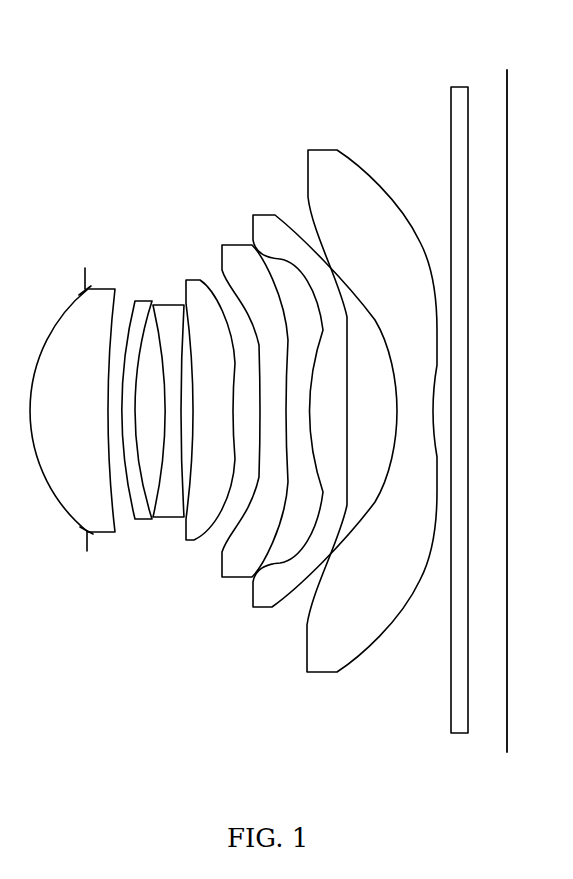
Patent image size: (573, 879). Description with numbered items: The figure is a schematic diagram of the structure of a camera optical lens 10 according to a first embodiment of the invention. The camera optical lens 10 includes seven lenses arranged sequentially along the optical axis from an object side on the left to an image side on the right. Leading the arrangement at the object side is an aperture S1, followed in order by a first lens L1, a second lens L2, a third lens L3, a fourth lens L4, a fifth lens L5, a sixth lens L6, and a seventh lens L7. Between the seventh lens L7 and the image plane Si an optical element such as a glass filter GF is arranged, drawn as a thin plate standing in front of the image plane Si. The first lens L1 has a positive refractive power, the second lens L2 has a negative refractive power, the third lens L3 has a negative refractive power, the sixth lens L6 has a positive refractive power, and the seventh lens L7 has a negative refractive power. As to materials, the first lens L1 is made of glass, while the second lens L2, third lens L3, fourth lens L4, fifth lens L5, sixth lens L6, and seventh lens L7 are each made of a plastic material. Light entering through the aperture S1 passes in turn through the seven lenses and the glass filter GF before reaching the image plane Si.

The camera optical lens 10 is at (290, 47).
The aperture S1 is at (75, 408).
The first lens L1 is at (73, 396).
The second lens L2 is at (137, 397).
The third lens L3 is at (168, 398).
The fourth lens L4 is at (207, 399).
The fifth lens L5 is at (255, 399).
The sixth lens L6 is at (324, 398).
The seventh lens L7 is at (372, 398).
The glass filter GF is at (460, 397).
The image plane Si is at (506, 396).